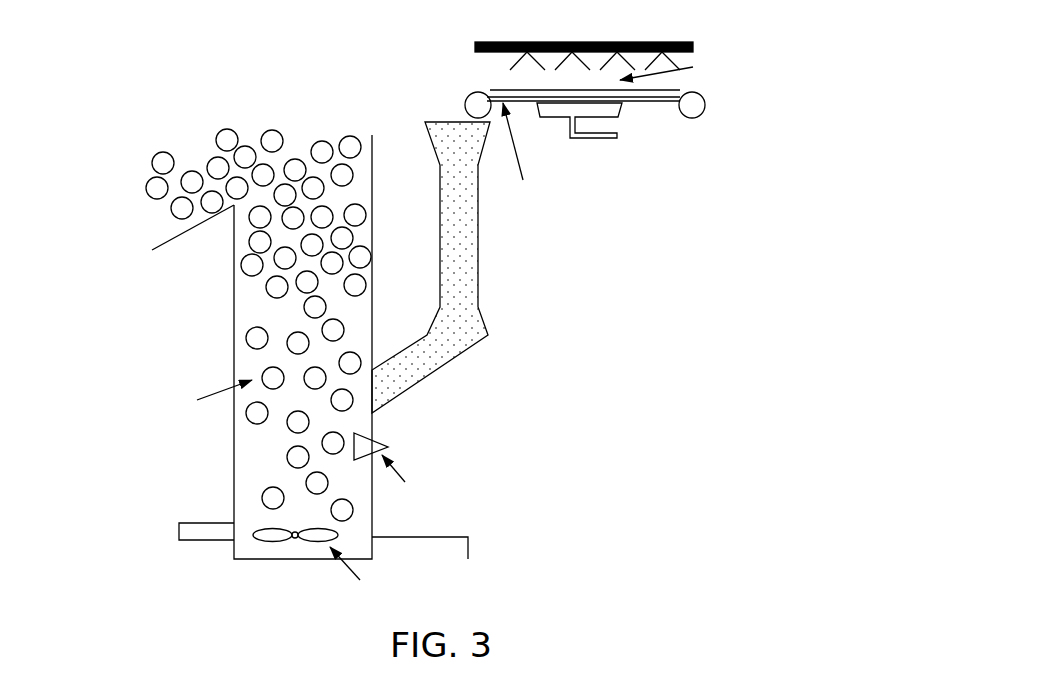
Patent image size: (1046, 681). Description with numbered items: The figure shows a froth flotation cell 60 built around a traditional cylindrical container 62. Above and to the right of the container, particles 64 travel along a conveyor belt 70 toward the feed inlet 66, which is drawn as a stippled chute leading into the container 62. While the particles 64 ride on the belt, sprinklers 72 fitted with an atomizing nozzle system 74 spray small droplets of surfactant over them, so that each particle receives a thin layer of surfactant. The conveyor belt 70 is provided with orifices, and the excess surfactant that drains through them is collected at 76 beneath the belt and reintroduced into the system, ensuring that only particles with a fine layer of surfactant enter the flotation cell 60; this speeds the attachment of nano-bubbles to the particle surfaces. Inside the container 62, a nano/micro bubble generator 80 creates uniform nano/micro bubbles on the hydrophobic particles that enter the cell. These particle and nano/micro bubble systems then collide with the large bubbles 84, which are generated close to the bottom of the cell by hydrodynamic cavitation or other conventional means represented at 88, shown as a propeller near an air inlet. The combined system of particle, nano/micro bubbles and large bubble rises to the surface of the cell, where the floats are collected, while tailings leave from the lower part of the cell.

The flotation cell 60 is at (133, 305).
The cylindrical container 62 is at (234, 287).
The particles 64 is at (820, 65).
The feed inlet 66 is at (478, 262).
The conveyor belt 70 is at (667, 88).
The sprinklers 72 is at (407, 62).
The atomizing nozzle system 74 is at (520, 60).
The surfactant collection 76 is at (650, 100).
The nano/micro bubble generator 80 is at (390, 440).
The large bubbles 84 is at (245, 339).
The hydrodynamic cavitation means 88 is at (345, 530).